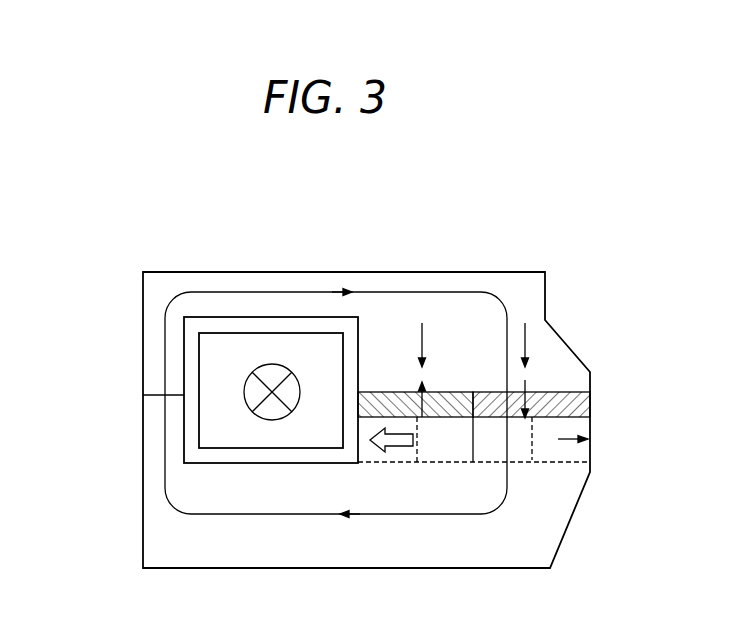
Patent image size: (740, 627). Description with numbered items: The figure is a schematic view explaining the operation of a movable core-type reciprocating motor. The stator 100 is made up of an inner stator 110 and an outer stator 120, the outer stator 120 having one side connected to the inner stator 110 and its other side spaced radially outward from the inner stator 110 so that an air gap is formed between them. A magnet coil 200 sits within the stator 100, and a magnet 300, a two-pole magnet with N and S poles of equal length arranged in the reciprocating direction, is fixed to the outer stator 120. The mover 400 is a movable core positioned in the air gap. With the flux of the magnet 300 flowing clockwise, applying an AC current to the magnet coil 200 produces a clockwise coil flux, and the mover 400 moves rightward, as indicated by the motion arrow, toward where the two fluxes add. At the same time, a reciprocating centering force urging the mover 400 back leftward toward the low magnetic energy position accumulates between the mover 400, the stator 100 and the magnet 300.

The stator 100 is at (314, 420).
The inner stator 110 is at (82, 352).
The outer stator 120 is at (143, 360).
The magnet coil 200 is at (256, 343).
The magnet 300 is at (590, 401).
The mover 400 is at (580, 450).